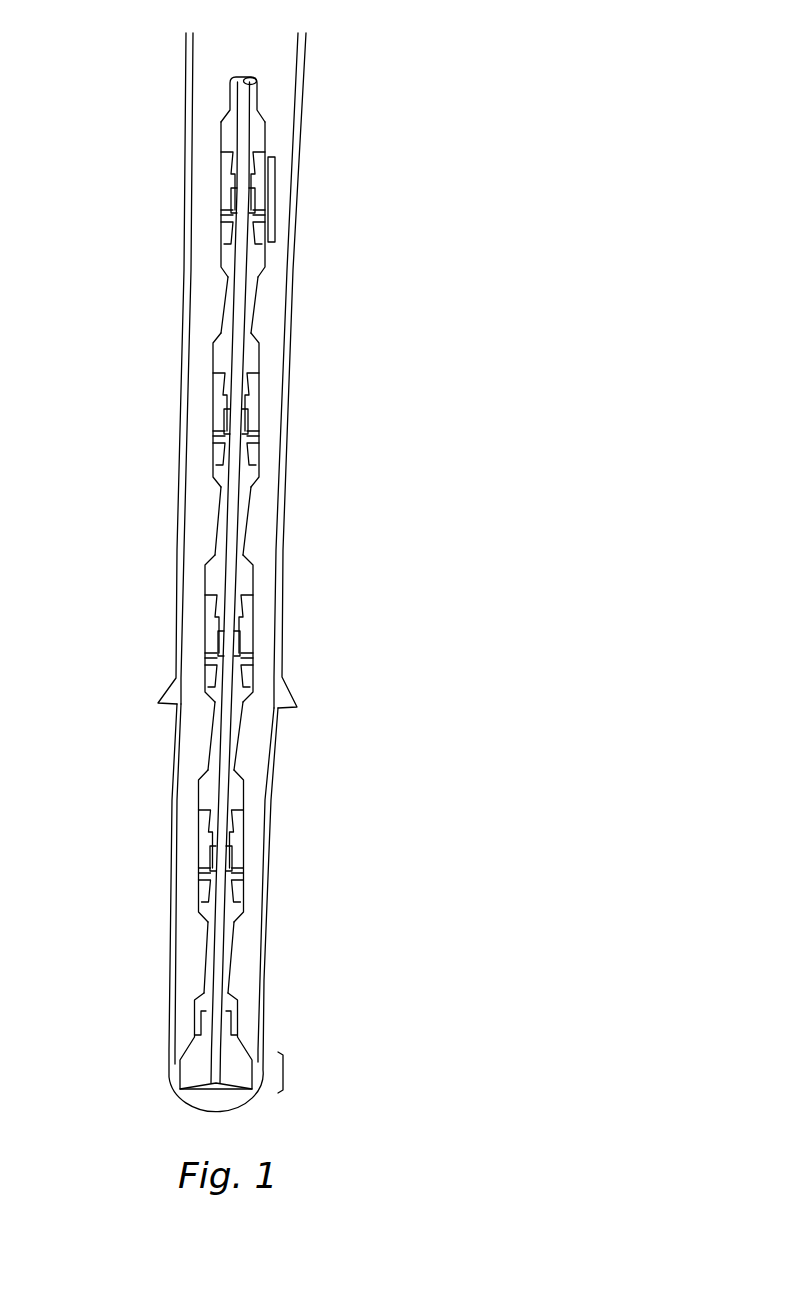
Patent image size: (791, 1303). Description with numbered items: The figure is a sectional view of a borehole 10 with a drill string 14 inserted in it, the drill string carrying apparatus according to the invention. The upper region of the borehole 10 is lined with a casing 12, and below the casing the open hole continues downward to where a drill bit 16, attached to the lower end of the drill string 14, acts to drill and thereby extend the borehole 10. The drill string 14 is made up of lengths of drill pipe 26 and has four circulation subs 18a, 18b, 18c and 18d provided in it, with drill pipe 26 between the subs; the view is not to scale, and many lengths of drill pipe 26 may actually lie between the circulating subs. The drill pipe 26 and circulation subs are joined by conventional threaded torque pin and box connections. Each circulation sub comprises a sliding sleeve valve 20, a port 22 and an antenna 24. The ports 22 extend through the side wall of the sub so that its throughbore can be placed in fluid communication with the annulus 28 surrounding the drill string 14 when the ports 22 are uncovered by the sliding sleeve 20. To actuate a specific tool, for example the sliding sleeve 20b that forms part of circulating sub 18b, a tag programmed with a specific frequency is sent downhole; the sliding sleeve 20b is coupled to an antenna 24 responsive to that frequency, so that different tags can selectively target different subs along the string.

The borehole 10 is at (268, 930).
The casing 12 is at (304, 53).
The drill string 14 is at (246, 301).
The drill bit 16 is at (283, 1072).
The circulation sub 18a is at (275, 193).
The circulation sub 18b is at (259, 397).
The circulation sub 18c is at (205, 620).
The circulation sub 18d is at (201, 815).
The sliding sleeve valve 20 is at (208, 872).
The sliding sleeve 20b is at (245, 437).
The port 22 is at (238, 657).
The antenna 24 is at (238, 617).
The drill pipe 26 is at (250, 356).
The annulus 28 is at (253, 743).